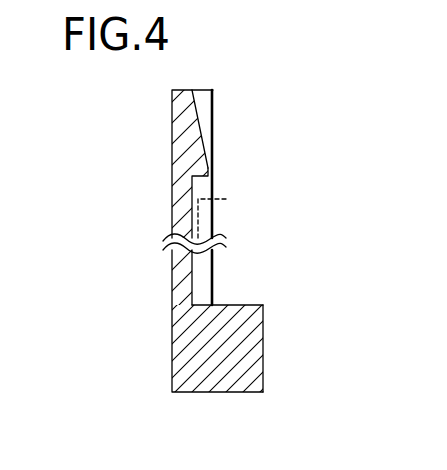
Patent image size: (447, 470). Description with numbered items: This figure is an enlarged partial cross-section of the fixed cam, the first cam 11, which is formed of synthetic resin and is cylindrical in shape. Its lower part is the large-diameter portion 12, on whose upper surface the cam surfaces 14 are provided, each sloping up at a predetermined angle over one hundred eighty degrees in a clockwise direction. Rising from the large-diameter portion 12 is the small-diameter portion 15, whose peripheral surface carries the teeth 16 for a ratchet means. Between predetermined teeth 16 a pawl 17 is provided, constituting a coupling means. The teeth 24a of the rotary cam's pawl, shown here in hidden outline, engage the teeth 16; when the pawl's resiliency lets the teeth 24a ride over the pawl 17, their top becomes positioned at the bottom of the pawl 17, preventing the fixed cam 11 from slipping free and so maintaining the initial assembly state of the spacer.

The first cam 11 is at (152, 335).
The large-diameter portion 12 is at (247, 350).
The cam surface 14 is at (243, 304).
The small-diameter portion 15 is at (200, 216).
The teeth 16 is at (212, 115).
The pawl 17 is at (201, 164).
The teeth 24a is at (212, 218).